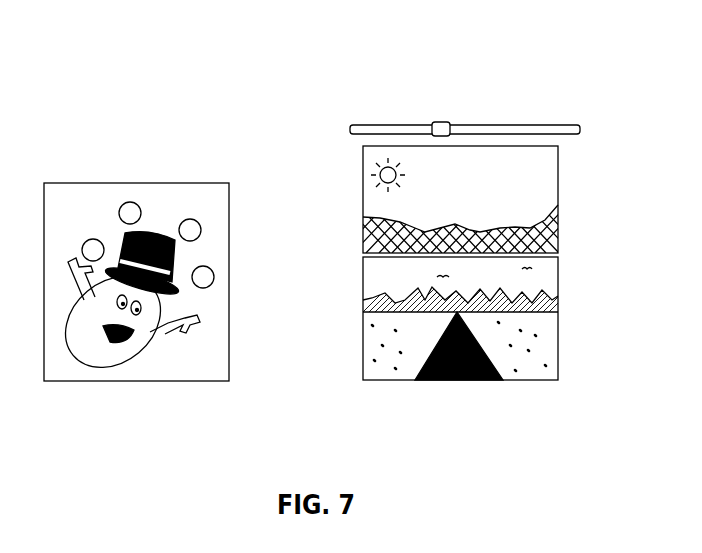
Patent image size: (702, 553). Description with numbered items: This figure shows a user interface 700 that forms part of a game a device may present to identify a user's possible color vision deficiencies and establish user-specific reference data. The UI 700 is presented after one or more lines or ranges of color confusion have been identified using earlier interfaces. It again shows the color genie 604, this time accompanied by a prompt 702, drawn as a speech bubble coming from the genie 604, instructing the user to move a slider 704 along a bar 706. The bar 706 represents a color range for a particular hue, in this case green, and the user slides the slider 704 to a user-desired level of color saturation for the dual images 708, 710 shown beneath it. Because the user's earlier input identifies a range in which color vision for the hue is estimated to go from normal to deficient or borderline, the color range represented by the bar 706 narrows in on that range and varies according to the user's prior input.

The user interface 700 is at (410, 68).
The prompt 702 is at (218, 162).
The color genie 604 is at (152, 381).
The slider 704 is at (444, 124).
The bar 706 is at (570, 134).
The dual image 708 is at (558, 206).
The dual image 710 is at (558, 311).